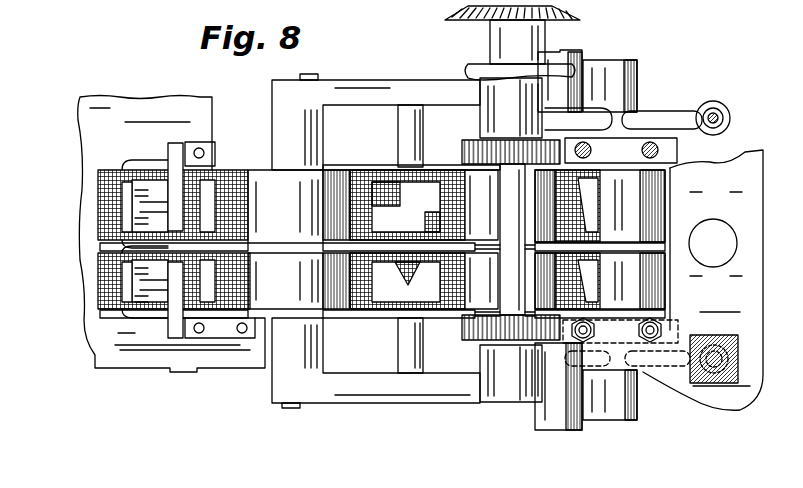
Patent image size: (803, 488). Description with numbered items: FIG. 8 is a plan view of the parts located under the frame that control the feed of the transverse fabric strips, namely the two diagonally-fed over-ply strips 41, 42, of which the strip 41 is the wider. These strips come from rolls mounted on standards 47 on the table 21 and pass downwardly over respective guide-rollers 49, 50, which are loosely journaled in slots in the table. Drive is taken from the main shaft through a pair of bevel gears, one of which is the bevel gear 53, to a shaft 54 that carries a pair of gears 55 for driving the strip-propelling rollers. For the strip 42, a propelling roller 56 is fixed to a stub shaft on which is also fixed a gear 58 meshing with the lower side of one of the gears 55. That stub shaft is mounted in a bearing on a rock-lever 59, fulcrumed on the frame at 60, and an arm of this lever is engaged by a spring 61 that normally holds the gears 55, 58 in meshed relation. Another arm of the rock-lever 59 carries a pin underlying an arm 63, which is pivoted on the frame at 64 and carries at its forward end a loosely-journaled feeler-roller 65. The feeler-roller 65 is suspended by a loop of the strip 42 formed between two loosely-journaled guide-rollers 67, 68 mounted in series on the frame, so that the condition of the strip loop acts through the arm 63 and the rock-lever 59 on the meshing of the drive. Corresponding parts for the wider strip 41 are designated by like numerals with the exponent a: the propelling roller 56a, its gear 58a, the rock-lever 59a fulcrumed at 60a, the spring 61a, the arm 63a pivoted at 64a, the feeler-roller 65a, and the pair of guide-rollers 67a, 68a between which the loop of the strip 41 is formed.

The table 21 is at (748, 390).
The over-ply strip 41 is at (98, 203).
The over-ply strip 42 is at (98, 300).
The standards 47 is at (712, 388).
The guide-roller 49 is at (660, 200).
The guide-roller 50 is at (648, 300).
The bevel gear 53 is at (575, 17).
The shaft 54 is at (510, 290).
The gears 55 is at (505, 145).
The propelling roller 56 is at (475, 285).
The propelling roller 56a is at (485, 190).
The gear 58 is at (468, 325).
The gear 58a is at (465, 147).
The rock-lever 59 is at (637, 407).
The rock-lever 59a is at (640, 83).
The fulcrum 60 is at (612, 421).
The fulcrum 60a is at (612, 60).
The spring 61 is at (735, 362).
The spring 61a is at (732, 118).
The arm 63 is at (355, 385).
The arm 63a is at (380, 82).
The pivot 64 is at (555, 432).
The pivot 64a is at (560, 52).
The feeler-roller 65 is at (270, 375).
The feeler-roller 65a is at (268, 185).
The guide-roller 67 is at (365, 312).
The guide-roller 67a is at (366, 170).
The guide-roller 68 is at (222, 322).
The guide-roller 68a is at (222, 168).